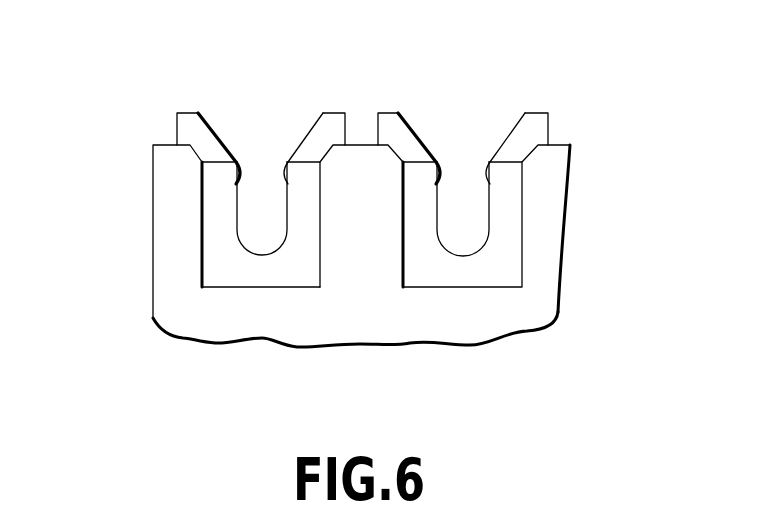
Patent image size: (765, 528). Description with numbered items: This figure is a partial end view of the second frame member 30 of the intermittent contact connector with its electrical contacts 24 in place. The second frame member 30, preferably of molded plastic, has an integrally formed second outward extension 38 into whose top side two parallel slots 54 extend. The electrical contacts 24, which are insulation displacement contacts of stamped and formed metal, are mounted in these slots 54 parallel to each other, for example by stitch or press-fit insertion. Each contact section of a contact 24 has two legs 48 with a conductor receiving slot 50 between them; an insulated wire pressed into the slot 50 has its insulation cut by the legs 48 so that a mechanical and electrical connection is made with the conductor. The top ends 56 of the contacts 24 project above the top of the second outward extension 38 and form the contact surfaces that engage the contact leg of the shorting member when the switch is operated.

The electrical contact 24 is at (186, 112).
The second frame member 30 is at (153, 247).
The second outward extension 38 is at (153, 283).
The leg 48 is at (210, 128).
The conductor receiving slot 50 is at (257, 240).
The slot 54 is at (418, 265).
The top end 56 is at (197, 112).